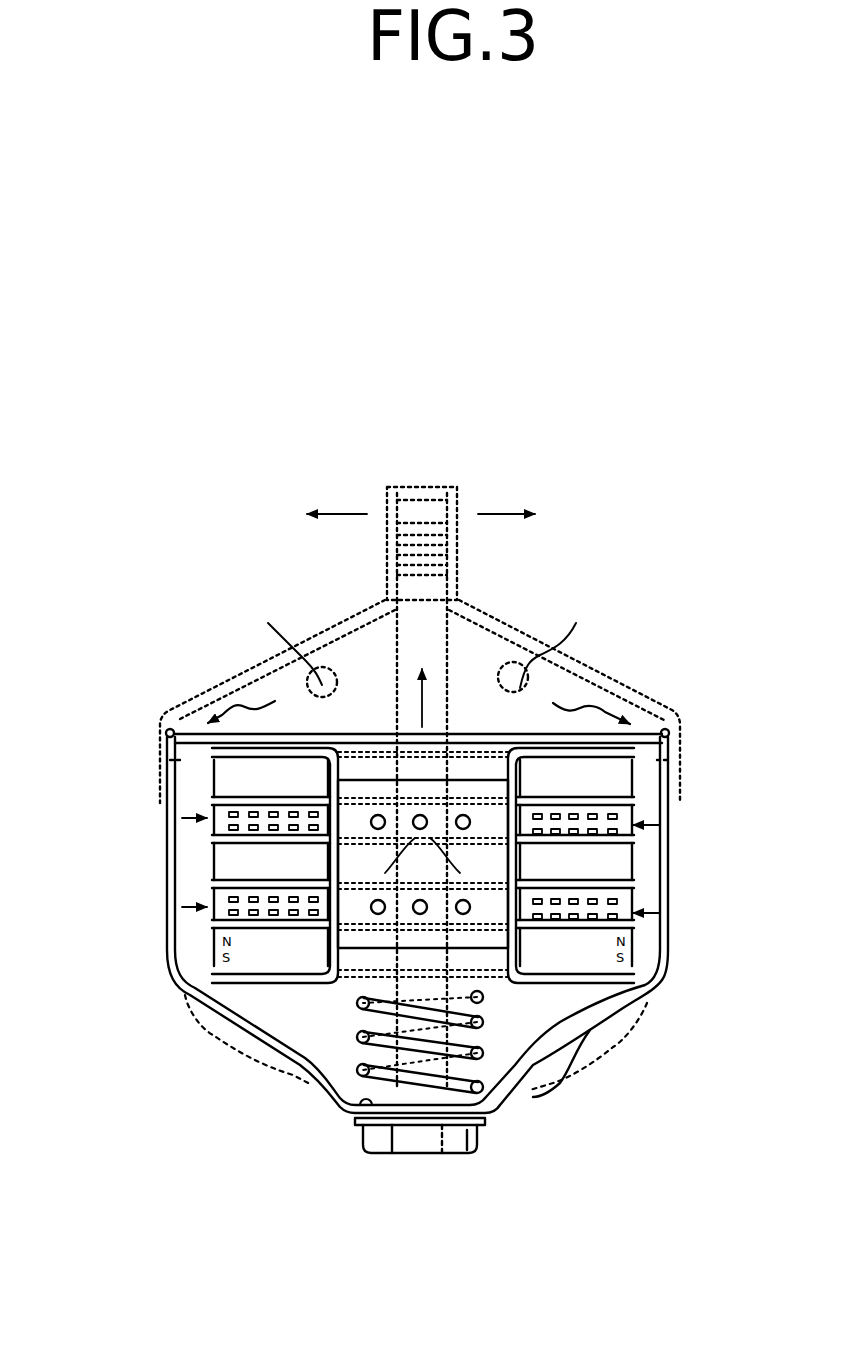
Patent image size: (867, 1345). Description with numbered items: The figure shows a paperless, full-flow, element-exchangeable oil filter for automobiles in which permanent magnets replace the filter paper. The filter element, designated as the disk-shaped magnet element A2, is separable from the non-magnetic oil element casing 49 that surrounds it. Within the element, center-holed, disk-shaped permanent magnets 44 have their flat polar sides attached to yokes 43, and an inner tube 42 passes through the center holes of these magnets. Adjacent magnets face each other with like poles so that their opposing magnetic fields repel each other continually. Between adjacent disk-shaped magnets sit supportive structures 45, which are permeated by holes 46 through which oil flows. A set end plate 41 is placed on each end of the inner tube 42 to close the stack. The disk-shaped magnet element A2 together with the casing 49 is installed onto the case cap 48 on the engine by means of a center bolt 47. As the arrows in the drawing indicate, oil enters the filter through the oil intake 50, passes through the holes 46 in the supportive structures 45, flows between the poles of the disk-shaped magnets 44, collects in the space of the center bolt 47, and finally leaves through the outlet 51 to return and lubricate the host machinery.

The set end plate 41 is at (483, 747).
The inner tube 42 is at (540, 778).
The yoke 43 is at (633, 845).
The disk-shaped permanent magnet 44 is at (633, 863).
The supportive structure 45 is at (630, 817).
The hole 46 is at (610, 917).
The center bolt 47 is at (413, 1153).
The case cap 48 is at (623, 690).
The non-magnetic oil element casing 49 is at (166, 930).
The oil intake 50 is at (507, 658).
The outlet 51 is at (413, 509).
The disk-shaped magnet element A2 is at (227, 733).